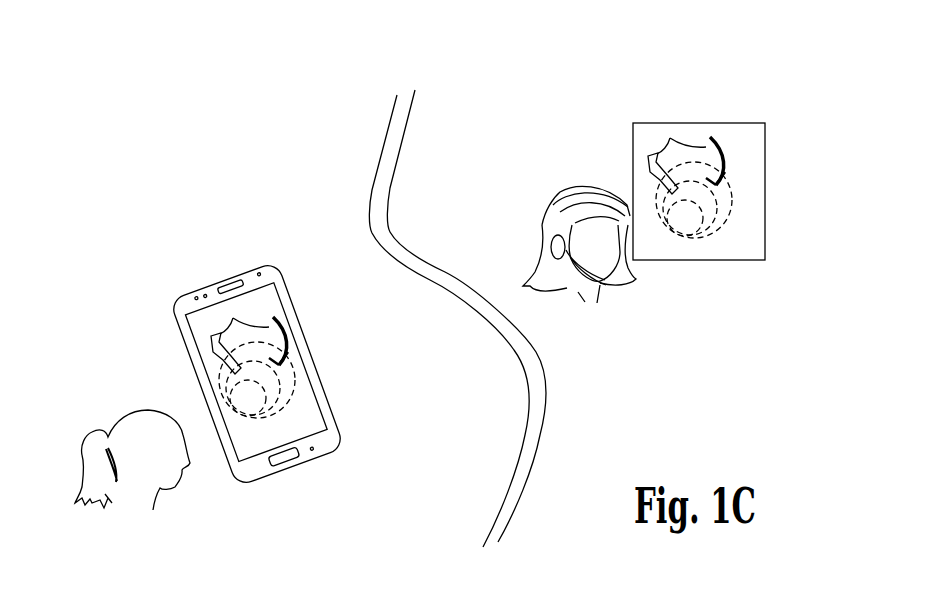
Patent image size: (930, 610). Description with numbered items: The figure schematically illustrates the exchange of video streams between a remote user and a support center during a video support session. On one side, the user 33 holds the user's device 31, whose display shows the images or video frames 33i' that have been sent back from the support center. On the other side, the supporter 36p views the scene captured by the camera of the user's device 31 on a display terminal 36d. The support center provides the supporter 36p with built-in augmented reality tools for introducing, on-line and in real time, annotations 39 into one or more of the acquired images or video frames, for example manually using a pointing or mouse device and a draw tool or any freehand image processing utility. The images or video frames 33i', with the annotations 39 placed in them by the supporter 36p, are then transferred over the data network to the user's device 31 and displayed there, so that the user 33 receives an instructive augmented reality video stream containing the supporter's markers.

The user's device 31 is at (307, 335).
The user 33 is at (82, 455).
The images/video frames 33i' is at (532, 295).
The supporter 36p is at (535, 241).
The display terminal 36d is at (765, 155).
The annotations 39 is at (233, 318).